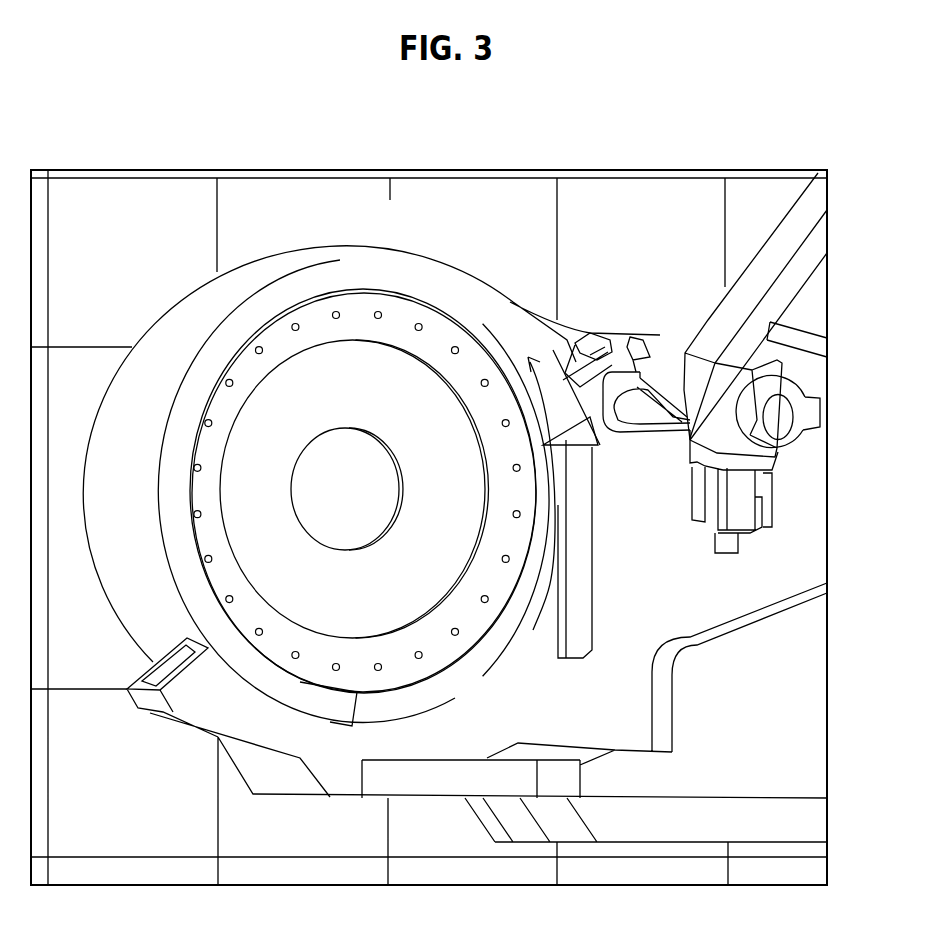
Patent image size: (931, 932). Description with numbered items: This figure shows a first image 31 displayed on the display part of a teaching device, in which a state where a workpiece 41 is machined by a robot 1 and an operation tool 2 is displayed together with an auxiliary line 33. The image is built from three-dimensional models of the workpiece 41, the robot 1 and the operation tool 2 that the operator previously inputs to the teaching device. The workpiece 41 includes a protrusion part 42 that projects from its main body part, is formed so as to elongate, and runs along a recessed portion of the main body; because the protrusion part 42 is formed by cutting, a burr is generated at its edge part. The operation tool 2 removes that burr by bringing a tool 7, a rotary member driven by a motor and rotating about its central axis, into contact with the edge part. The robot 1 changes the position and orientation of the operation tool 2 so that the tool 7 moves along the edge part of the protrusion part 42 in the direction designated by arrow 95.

The robot 1 is at (797, 278).
The operation tool 2 is at (615, 382).
The tool 7 is at (565, 440).
The first image 31 is at (663, 171).
The auxiliary line 33 is at (392, 200).
The workpiece 41 is at (193, 308).
The protrusion part 42 is at (303, 285).
The arrow 95 is at (550, 395).